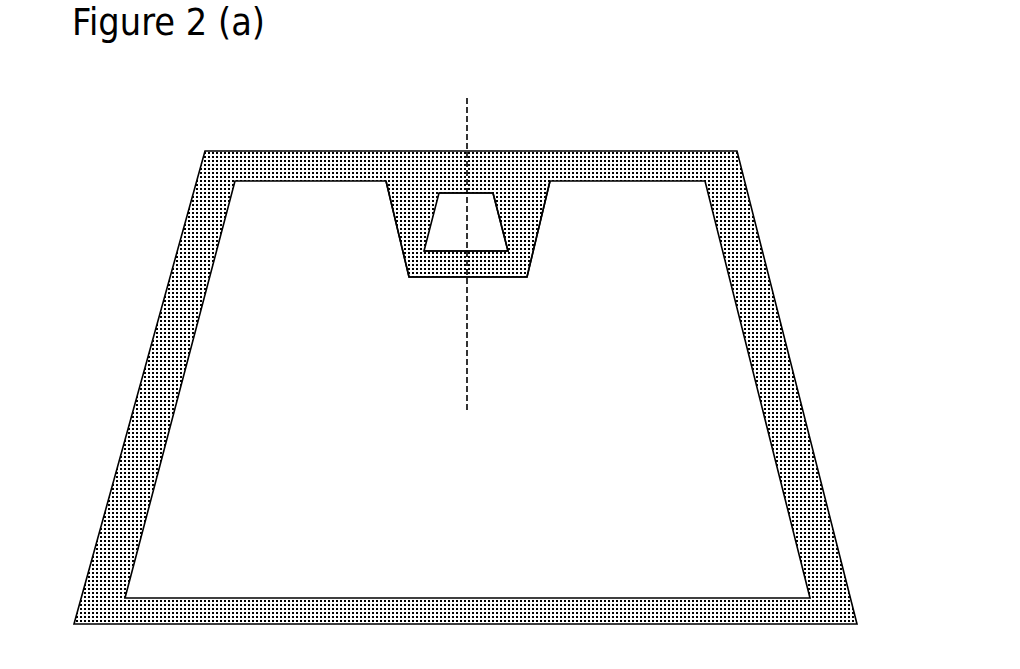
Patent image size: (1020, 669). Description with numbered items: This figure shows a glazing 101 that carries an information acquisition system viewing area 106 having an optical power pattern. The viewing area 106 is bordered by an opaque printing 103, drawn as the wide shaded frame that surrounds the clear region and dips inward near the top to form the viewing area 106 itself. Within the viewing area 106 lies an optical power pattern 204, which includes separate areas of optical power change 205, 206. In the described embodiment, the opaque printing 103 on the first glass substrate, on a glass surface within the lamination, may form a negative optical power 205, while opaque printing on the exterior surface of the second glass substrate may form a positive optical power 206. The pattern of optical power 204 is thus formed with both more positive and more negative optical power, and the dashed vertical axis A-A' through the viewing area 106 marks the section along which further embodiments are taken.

The glazing 101 is at (84, 249).
The opaque printing 103 is at (690, 165).
The information acquisition system viewing area 106 is at (493, 190).
The optical power pattern 204 is at (450, 228).
The negative optical power 205 is at (453, 198).
The positive optical power 206 is at (482, 242).